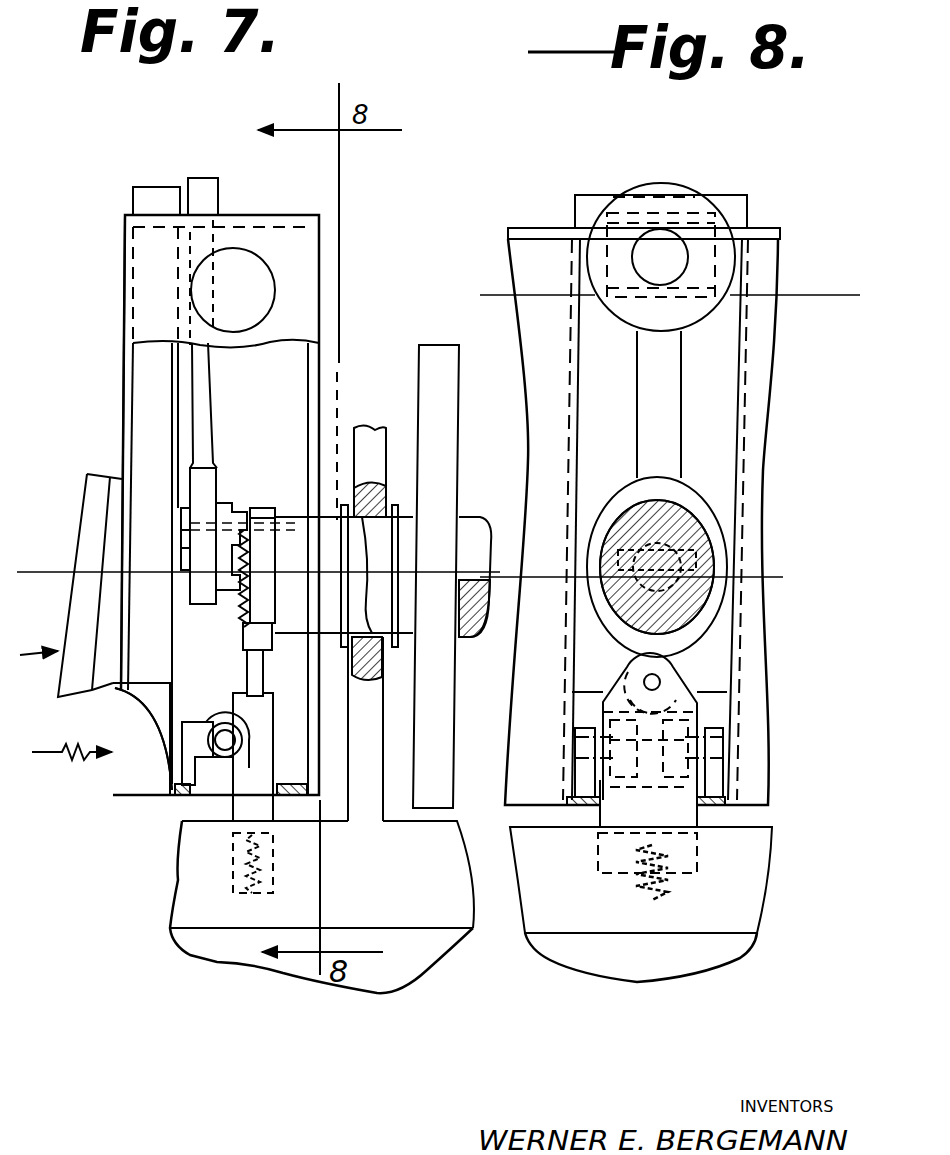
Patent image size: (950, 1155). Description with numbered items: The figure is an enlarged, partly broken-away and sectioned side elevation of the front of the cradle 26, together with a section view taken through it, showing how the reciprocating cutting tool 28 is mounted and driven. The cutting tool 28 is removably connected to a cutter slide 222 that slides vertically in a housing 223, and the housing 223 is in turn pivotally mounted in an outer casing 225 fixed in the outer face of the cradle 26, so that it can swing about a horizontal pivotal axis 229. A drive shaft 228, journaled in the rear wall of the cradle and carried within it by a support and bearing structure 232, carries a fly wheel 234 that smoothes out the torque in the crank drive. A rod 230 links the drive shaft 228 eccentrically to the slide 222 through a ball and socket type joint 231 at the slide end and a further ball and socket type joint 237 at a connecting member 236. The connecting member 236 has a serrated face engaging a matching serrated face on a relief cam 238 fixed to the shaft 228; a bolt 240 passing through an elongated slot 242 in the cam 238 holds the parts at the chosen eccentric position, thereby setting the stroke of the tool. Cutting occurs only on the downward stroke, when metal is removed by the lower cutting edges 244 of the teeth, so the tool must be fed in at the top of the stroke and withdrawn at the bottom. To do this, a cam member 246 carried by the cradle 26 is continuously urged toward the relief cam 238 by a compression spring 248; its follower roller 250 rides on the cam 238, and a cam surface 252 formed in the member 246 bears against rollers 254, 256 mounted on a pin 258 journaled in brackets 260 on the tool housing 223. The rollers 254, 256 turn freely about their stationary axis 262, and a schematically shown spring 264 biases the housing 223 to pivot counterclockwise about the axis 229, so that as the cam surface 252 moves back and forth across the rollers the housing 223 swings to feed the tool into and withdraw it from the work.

In FIG. 7, the cradle 26 is at (364, 992).
In FIG. 8, the cradle 26 is at (648, 985).
In FIG. 7, the cutting tool 28 is at (29, 659).
In FIG. 7, the cutter slide 222 is at (124, 425).
In FIG. 8, the cutter slide 222 is at (750, 204).
In FIG. 7, the housing 223 is at (155, 798).
In FIG. 8, the housing 223 is at (520, 228).
In FIG. 7, the outer casing 225 is at (199, 934).
In FIG. 8, the outer casing 225 is at (566, 934).
In FIG. 7, the drive shaft 228 is at (467, 516).
In FIG. 8, the drive shaft 228 is at (690, 563).
In FIG. 7, the horizontal pivotal axis 229 is at (240, 290).
In FIG. 8, the horizontal pivotal axis 229 is at (826, 295).
In FIG. 7, the rod 230 is at (214, 424).
In FIG. 8, the rod 230 is at (674, 200).
In FIG. 7, the ball and socket type joint 231 is at (212, 208).
In FIG. 7, the support and bearing structure 232 is at (344, 623).
In FIG. 7, the fly wheel 234 is at (440, 345).
In FIG. 7, the connecting member 236 is at (228, 612).
In FIG. 7, the ball and socket type joint 237 is at (180, 478).
In FIG. 7, the relief cam 238 is at (266, 513).
In FIG. 8, the relief cam 238 is at (727, 643).
In FIG. 7, the bolt 240 is at (233, 502).
In FIG. 7, the elongated slot 242 is at (272, 598).
In FIG. 7, the lower cutting edges 244 is at (75, 697).
In FIG. 7, the cam member 246 is at (322, 826).
In FIG. 8, the cam member 246 is at (597, 816).
In FIG. 7, the compression spring 248 is at (240, 893).
In FIG. 8, the compression spring 248 is at (697, 863).
In FIG. 7, the follower roller 250 is at (247, 686).
In FIG. 8, the follower roller 250 is at (672, 665).
In FIG. 7, the cam surface 252 is at (250, 775).
In FIG. 7, the roller 254 is at (216, 722).
In FIG. 8, the roller 254 is at (735, 716).
In FIG. 8, the roller 256 is at (615, 690).
In FIG. 7, the pin 258 is at (222, 766).
In FIG. 8, the pin 258 is at (730, 772).
In FIG. 7, the brackets 260 is at (165, 760).
In FIG. 8, the brackets 260 is at (572, 782).
In FIG. 7, the stationary axis 262 is at (220, 741).
In FIG. 7, the spring 264 is at (57, 765).